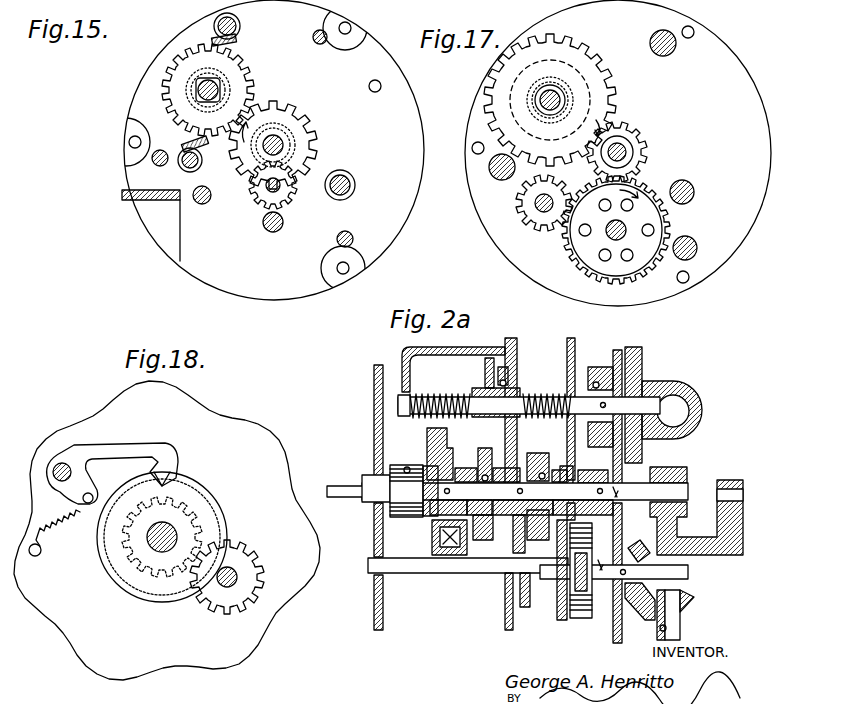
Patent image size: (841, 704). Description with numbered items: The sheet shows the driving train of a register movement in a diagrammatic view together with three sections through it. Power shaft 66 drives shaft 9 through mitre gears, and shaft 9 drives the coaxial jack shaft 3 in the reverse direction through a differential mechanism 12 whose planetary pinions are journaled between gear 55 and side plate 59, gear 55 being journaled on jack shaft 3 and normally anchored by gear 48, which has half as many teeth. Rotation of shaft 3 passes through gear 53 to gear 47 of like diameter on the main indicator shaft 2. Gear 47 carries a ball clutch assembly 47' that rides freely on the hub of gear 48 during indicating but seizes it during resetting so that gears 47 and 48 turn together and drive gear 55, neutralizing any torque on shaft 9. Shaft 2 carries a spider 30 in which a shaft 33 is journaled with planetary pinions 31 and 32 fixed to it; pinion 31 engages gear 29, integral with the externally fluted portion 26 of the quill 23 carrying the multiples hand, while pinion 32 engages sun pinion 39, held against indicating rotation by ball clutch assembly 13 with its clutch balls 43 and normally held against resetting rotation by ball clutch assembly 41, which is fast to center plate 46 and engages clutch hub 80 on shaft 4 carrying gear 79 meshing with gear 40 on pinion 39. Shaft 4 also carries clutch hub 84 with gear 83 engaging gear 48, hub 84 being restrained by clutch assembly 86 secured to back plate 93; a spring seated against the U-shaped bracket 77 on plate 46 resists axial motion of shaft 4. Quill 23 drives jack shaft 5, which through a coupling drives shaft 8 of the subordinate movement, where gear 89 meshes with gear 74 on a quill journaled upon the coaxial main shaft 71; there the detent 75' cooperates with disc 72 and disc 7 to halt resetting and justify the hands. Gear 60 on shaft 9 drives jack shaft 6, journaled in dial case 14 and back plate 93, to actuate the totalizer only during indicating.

In FIG. 15, the main indicator shaft 2 is at (287, 143).
In FIG. 17, the main indicator shaft 2 is at (634, 128).
In FIG. 2A, the main indicator shaft 2 is at (634, 486).
In FIG. 15, the jack shaft 3 is at (273, 233).
In FIG. 17, the jack shaft 3 is at (616, 236).
In FIG. 2A, the jack shaft 3 is at (490, 575).
In FIG. 15, the shaft 4 is at (198, 90).
In FIG. 17, the shaft 4 is at (538, 95).
In FIG. 2A, the shaft 4 is at (648, 400).
In FIG. 15, the jack shaft 5 is at (355, 185).
In FIG. 15, the jack shaft 6 is at (202, 205).
In FIG. 17, the jack shaft 6 is at (542, 215).
In FIG. 18, the disc 7 is at (215, 497).
In FIG. 18, the shaft 8 is at (222, 591).
In FIG. 2A, the shaft 9 is at (688, 573).
In FIG. 2A, the differential mechanism 12 is at (580, 622).
In FIG. 15, the ball clutch assembly 13 is at (292, 130).
In FIG. 2A, the ball clutch assembly 13 is at (486, 538).
In FIG. 2A, the dial case 14 is at (374, 388).
In FIG. 2A, the quill 23 is at (352, 480).
In FIG. 2A, the externally fluted portion 26 is at (406, 503).
In FIG. 2A, the gear 29 is at (426, 520).
In FIG. 17, the spider 30 is at (521, 220).
In FIG. 2A, the spider 30 is at (427, 443).
In FIG. 2A, the planetary pinion 31 is at (432, 556).
In FIG. 15, the planetary pinion 32 is at (262, 202).
In FIG. 2A, the planetary pinion 32 is at (470, 556).
In FIG. 15, the shaft 33 is at (280, 188).
In FIG. 2A, the shaft 33 is at (452, 556).
In FIG. 15, the sun pinion 39 is at (303, 117).
In FIG. 2A, the sun pinion 39 is at (465, 468).
In FIG. 15, the gear 40 is at (241, 162).
In FIG. 2A, the gear 40 is at (484, 448).
In FIG. 15, the ball clutch assembly 41 is at (203, 47).
In FIG. 2A, the ball clutch assembly 41 is at (510, 375).
In FIG. 15, the clutch balls 43 is at (279, 108).
In FIG. 15, the center plate 46 is at (400, 211).
In FIG. 2A, the center plate 46 is at (512, 345).
In FIG. 2A, the gear 47 is at (530, 453).
In FIG. 2A, the ball clutch assembly 47' is at (553, 530).
In FIG. 17, the gear 48 is at (643, 146).
In FIG. 2A, the gear 48 is at (572, 472).
In FIG. 2A, the gear 53 is at (513, 610).
In FIG. 17, the gear 55 is at (637, 263).
In FIG. 2A, the gear 55 is at (557, 613).
In FIG. 2A, the side plate 59 is at (650, 621).
In FIG. 17, the gear 60 is at (673, 208).
In FIG. 2A, the power shaft 66 is at (682, 618).
In FIG. 18, the main shaft 71 is at (150, 546).
In FIG. 18, the disc 72 is at (205, 492).
In FIG. 18, the gear 74 is at (146, 578).
In FIG. 18, the detent 75' is at (121, 483).
In FIG. 15, the U-shaped supporting bracket 77 is at (238, 40).
In FIG. 15, the gear 79 is at (216, 85).
In FIG. 2A, the gear 79 is at (485, 375).
In FIG. 15, the clutch hub 80 is at (218, 75).
In FIG. 17, the gear 83 is at (584, 62).
In FIG. 2A, the gear 83 is at (567, 358).
In FIG. 17, the clutch hub 84 is at (558, 87).
In FIG. 17, the clutch assembly 86 is at (597, 75).
In FIG. 2A, the clutch assembly 86 is at (600, 367).
In FIG. 18, the gear 89 is at (262, 563).
In FIG. 17, the back plate 93 is at (738, 73).
In FIG. 2A, the back plate 93 is at (622, 353).